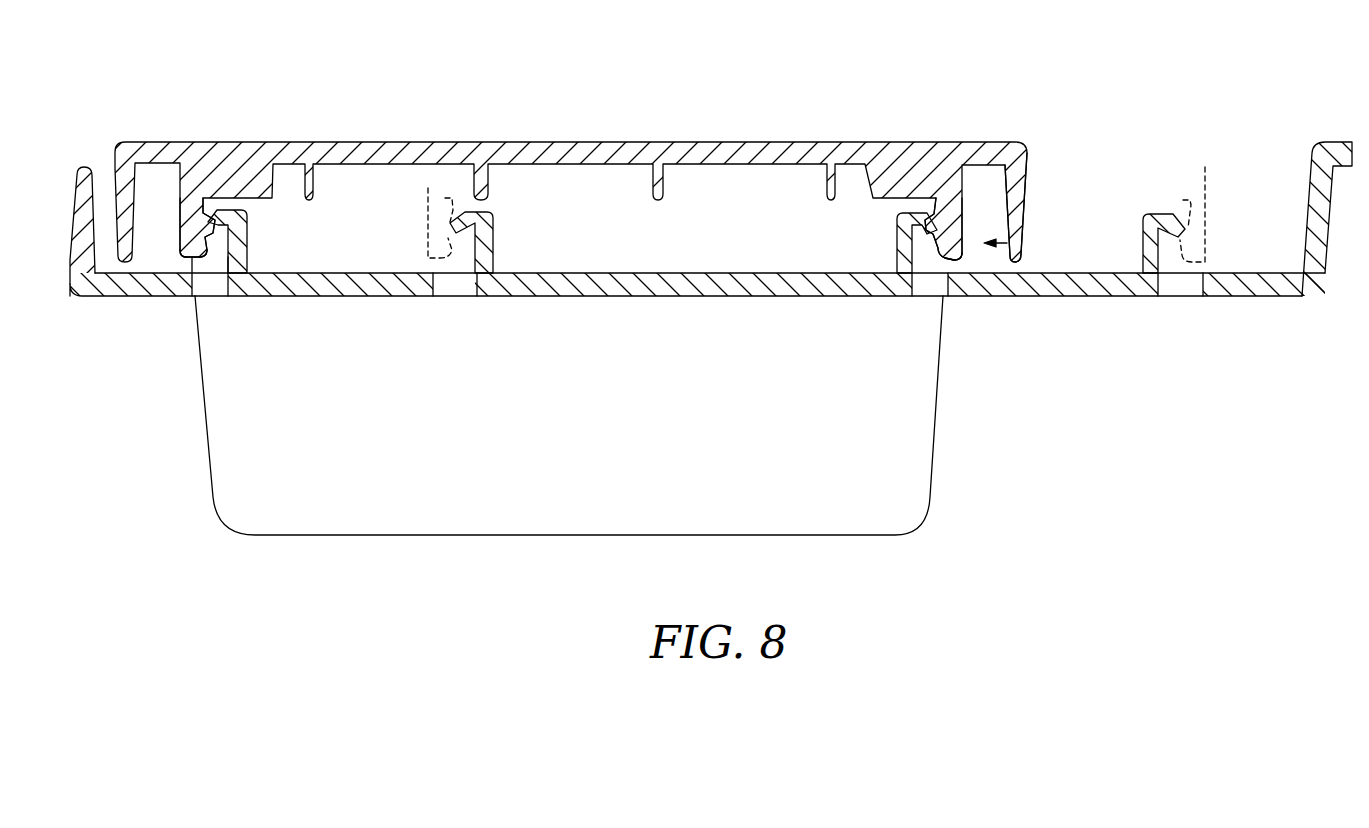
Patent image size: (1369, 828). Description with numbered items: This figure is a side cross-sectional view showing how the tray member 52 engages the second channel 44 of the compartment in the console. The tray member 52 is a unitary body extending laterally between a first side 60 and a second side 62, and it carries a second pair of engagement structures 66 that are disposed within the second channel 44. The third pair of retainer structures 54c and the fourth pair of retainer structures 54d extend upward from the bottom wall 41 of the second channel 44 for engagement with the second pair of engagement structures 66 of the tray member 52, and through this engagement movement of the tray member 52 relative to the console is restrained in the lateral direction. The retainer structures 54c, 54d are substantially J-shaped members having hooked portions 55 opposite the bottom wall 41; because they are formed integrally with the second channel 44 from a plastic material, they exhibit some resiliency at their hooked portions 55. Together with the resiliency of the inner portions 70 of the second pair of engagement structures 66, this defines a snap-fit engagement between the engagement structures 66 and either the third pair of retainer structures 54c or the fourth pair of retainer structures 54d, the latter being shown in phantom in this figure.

The bottom wall 41 is at (692, 283).
The second channel 44 is at (1257, 160).
The tray member 52 is at (430, 141).
The third pair of retainer structures 54c is at (245, 233).
The fourth pair of retainer structures 54d is at (492, 232).
The hooked portions 55 is at (205, 216).
The first side 60 is at (116, 170).
The second side 62 is at (1023, 168).
The second pair of engagement structures 66 is at (154, 190).
The inner portions 70 is at (195, 247).